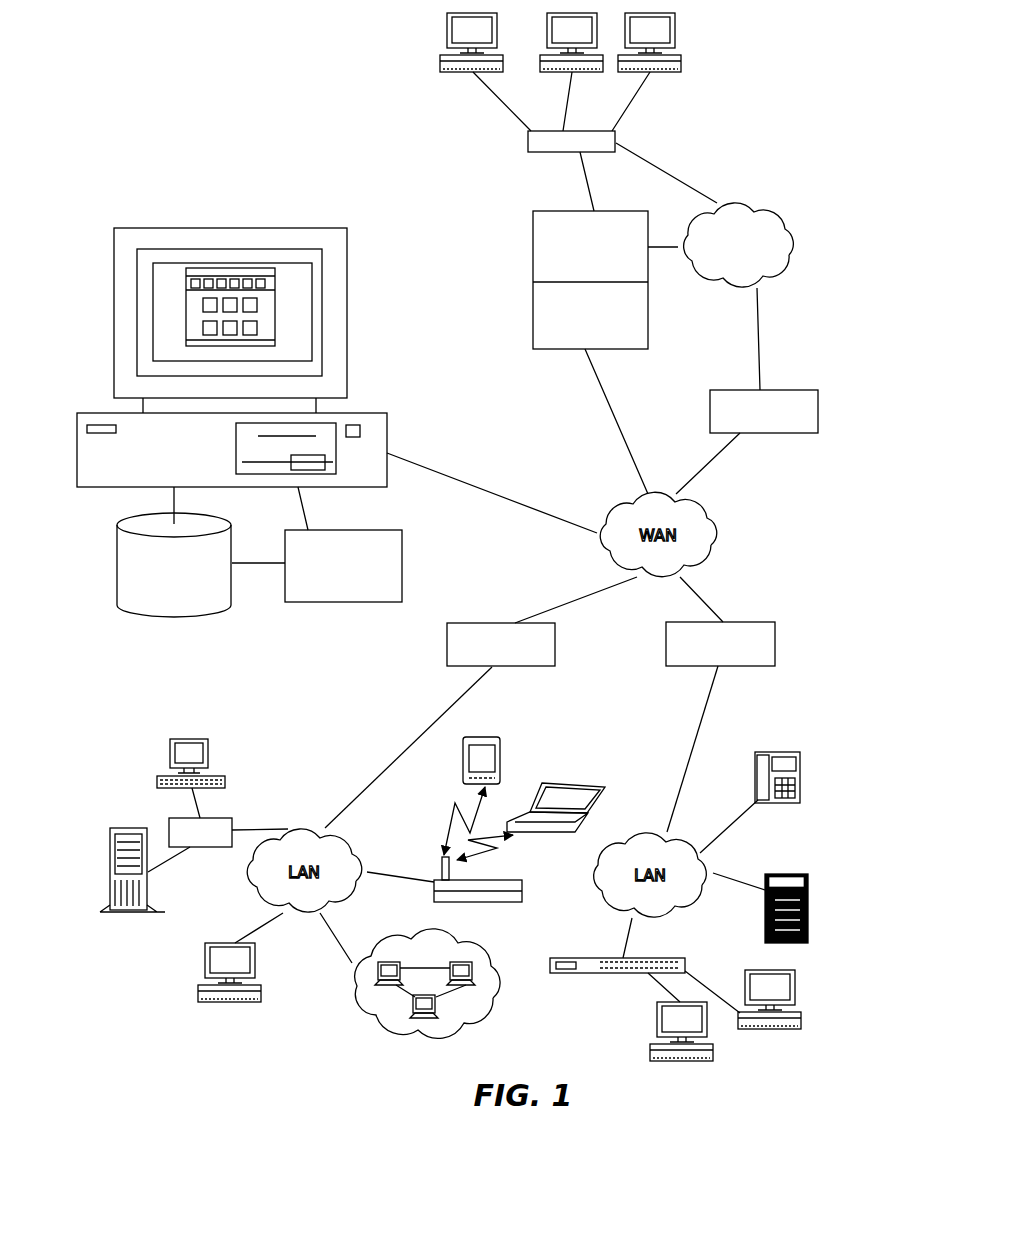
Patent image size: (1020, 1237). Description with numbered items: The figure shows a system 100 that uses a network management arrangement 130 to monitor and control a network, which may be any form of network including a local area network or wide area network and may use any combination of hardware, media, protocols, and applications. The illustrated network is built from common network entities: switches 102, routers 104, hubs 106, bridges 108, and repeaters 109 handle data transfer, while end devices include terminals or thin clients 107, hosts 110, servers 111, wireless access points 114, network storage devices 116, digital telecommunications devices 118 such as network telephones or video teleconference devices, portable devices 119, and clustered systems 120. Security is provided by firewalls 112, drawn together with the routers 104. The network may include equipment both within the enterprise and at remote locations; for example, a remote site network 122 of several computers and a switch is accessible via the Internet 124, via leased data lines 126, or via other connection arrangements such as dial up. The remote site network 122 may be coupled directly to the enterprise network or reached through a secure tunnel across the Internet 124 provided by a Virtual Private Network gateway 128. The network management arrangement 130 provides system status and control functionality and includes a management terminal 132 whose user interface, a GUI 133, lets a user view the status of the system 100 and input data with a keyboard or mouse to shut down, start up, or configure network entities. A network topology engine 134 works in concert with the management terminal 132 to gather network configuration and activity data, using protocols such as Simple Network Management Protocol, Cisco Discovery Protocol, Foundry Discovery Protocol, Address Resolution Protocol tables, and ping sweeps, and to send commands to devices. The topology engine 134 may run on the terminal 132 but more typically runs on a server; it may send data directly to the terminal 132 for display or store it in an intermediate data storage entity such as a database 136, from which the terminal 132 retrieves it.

The system 100 is at (184, 90).
The switch 102 is at (615, 978).
The router 104 is at (575, 291).
The hub 106 is at (240, 816).
The terminal/thin client 107 is at (205, 735).
The bridge 108 is at (475, 623).
The repeater 109 is at (753, 623).
The host 110 is at (233, 1003).
The server 111 is at (135, 915).
The firewall 112 is at (625, 350).
The wireless access point 114 is at (500, 902).
The network storage device 116 is at (780, 872).
The digital telecommunications device 118 is at (787, 752).
The portable device 119 is at (492, 738).
The clustered system 120 is at (460, 1037).
The remote site network 122 is at (478, 118).
The Internet 124 is at (770, 203).
The leased data lines 126 is at (587, 184).
The Virtual Private Network (VPN) gateway 128 is at (758, 434).
The network management arrangement 130 is at (155, 195).
The management terminal 132 is at (253, 357).
The GUI 133 is at (276, 325).
The network topology engine 134 is at (365, 529).
The database 136 is at (224, 514).